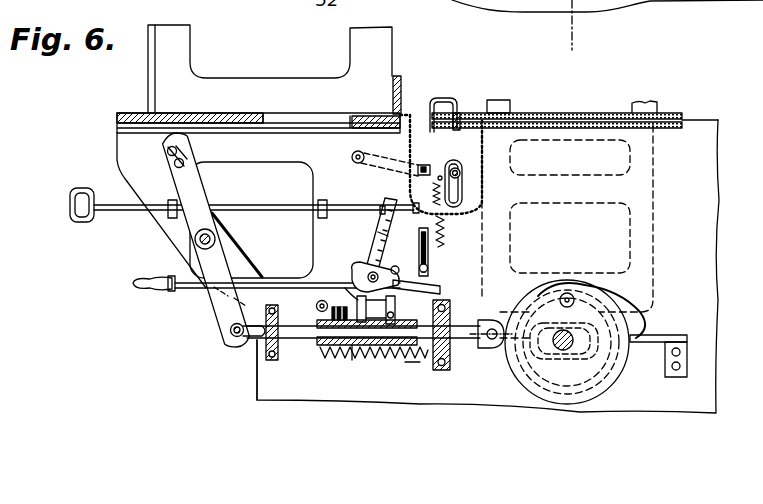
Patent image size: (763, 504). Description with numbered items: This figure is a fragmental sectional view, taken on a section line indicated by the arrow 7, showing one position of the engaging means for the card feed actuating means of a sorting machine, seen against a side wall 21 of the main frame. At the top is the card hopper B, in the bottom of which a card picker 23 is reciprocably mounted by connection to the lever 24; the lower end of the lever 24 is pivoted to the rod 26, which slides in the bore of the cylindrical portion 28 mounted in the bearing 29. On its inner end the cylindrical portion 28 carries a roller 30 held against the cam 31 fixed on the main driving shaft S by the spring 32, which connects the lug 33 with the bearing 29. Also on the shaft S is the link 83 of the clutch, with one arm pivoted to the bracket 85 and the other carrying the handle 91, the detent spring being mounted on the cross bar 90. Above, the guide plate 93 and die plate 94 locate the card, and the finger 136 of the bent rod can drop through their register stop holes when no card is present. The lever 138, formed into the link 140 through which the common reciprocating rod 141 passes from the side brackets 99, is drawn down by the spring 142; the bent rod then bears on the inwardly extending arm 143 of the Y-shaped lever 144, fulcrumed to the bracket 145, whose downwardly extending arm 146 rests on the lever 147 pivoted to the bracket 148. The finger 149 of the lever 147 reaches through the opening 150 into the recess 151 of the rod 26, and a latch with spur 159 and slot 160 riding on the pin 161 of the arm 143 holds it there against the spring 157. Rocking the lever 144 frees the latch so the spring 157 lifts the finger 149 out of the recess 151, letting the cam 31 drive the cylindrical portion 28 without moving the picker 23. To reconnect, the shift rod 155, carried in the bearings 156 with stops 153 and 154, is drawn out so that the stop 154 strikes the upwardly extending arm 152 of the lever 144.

The section line 7 is at (574, 40).
The side wall 21 is at (602, 206).
The card picker 23 is at (235, 126).
The lever 24 is at (197, 184).
The rod 26 is at (253, 345).
The cylindrical portion 28 is at (312, 348).
The bearing 29 is at (445, 371).
The roller 30 is at (490, 350).
The cam 31 is at (638, 322).
The spring 32 is at (414, 365).
The lug 33 is at (258, 388).
The link 83 is at (553, 348).
The bracket 85 is at (690, 350).
The cross bar 90 is at (452, 318).
The handle 91 is at (142, 289).
The guide plate 93 is at (683, 118).
The die plate 94 is at (488, 266).
The side bracket 99 is at (641, 102).
The finger 136 is at (448, 98).
The lever 138 is at (416, 167).
The link 140 is at (468, 184).
The reciprocating rod 141 is at (458, 172).
The spring 142 is at (442, 218).
The inwardly extending arm 143 is at (442, 291).
The Y-shaped lever 144 is at (314, 243).
The bracket 145 is at (376, 358).
The downwardly extending arm 146 is at (368, 268).
The lever 147 is at (317, 304).
The bracket 148 is at (332, 314).
The finger 149 is at (330, 350).
The opening 150 is at (323, 357).
The recess 151 is at (360, 362).
The upwardly extending arm 152 is at (383, 235).
The stop 153 is at (388, 203).
The stop 154 is at (410, 209).
The shift rod 155 is at (252, 204).
The bearing 156 is at (324, 200).
The spring 157 is at (347, 289).
The spur 159 is at (396, 300).
The slot 160 is at (430, 282).
The pin 161 is at (405, 262).
The card hopper B is at (274, 69).
The main driving shaft S is at (572, 348).